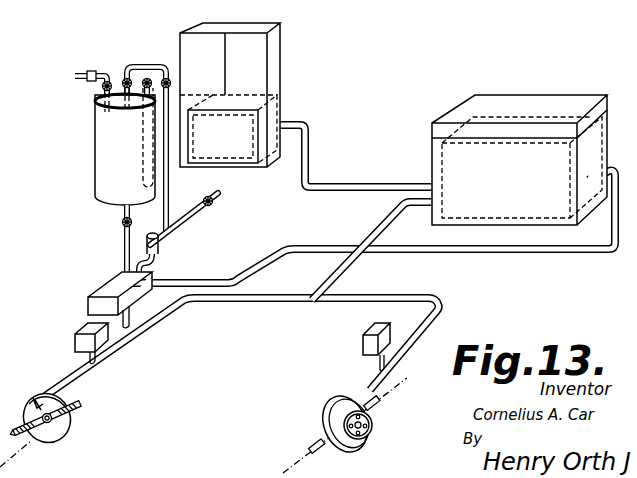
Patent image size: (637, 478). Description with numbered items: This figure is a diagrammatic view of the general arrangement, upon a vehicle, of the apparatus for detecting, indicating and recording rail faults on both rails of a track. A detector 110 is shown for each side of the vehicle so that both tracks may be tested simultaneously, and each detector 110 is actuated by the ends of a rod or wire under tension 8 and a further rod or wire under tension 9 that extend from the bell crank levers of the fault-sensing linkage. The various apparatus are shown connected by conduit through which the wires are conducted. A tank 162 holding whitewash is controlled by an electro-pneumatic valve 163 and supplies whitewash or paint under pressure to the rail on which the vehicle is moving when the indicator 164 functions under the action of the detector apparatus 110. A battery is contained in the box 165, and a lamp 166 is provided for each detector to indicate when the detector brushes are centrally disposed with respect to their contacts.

The tank 162 is at (146, 174).
The electro-pneumatic valve 163 is at (88, 303).
The indicator 164 is at (519, 160).
The box 165 is at (230, 95).
The lamp 166 is at (75, 343).
The detector 110 is at (63, 423).
The rod or wire under tension 8 is at (310, 451).
The rod or wire under tension 9 is at (13, 461).